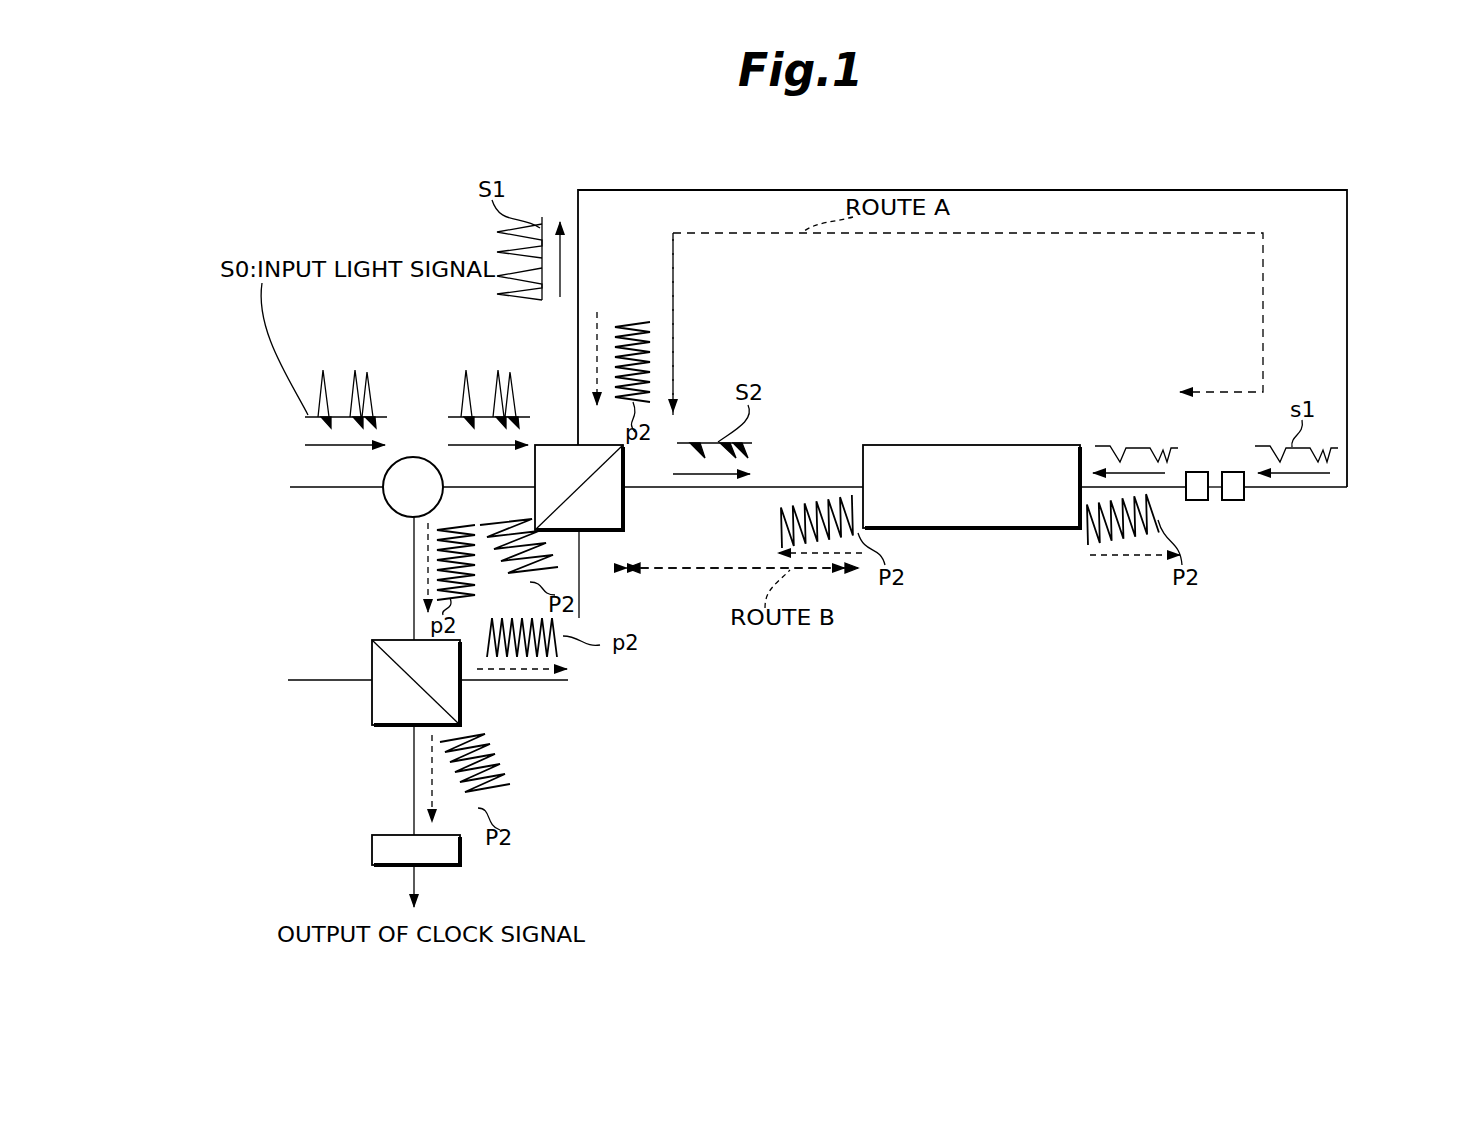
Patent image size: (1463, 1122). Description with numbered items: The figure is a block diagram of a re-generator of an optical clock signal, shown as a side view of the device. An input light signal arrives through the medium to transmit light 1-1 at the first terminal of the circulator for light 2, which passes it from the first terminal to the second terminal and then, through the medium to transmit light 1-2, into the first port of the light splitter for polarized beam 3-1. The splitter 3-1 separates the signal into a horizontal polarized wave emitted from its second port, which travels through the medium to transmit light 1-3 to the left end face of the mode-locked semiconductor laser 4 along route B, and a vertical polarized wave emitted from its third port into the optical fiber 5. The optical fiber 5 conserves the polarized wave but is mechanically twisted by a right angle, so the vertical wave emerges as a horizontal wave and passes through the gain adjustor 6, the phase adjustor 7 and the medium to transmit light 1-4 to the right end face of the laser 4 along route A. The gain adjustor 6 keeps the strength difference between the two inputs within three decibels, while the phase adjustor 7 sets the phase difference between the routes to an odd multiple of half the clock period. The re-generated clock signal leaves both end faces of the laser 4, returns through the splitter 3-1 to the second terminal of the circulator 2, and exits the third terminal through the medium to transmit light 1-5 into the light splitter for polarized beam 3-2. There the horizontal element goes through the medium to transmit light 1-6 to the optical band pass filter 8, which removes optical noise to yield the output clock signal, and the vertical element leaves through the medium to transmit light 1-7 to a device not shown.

The circulator for light 2 is at (385, 470).
The mode-locked semiconductor laser 4 is at (930, 445).
The optical fiber 5 is at (625, 188).
The gain adjustor 6 is at (1232, 500).
The phase adjustor 7 is at (1199, 500).
The optical band pass filter 8 is at (445, 868).
The medium to transmit light 1-1 is at (307, 488).
The medium to transmit light 1-2 is at (448, 483).
The medium to transmit light 1-3 is at (760, 487).
The medium to transmit light 1-4 is at (1087, 485).
The medium to transmit light 1-5 is at (413, 590).
The medium to transmit light 1-6 is at (417, 793).
The medium to transmit light 1-7 is at (530, 683).
The light splitter for polarized beam 3-1 is at (616, 530).
The light splitter for polarized beam 3-2 is at (372, 700).